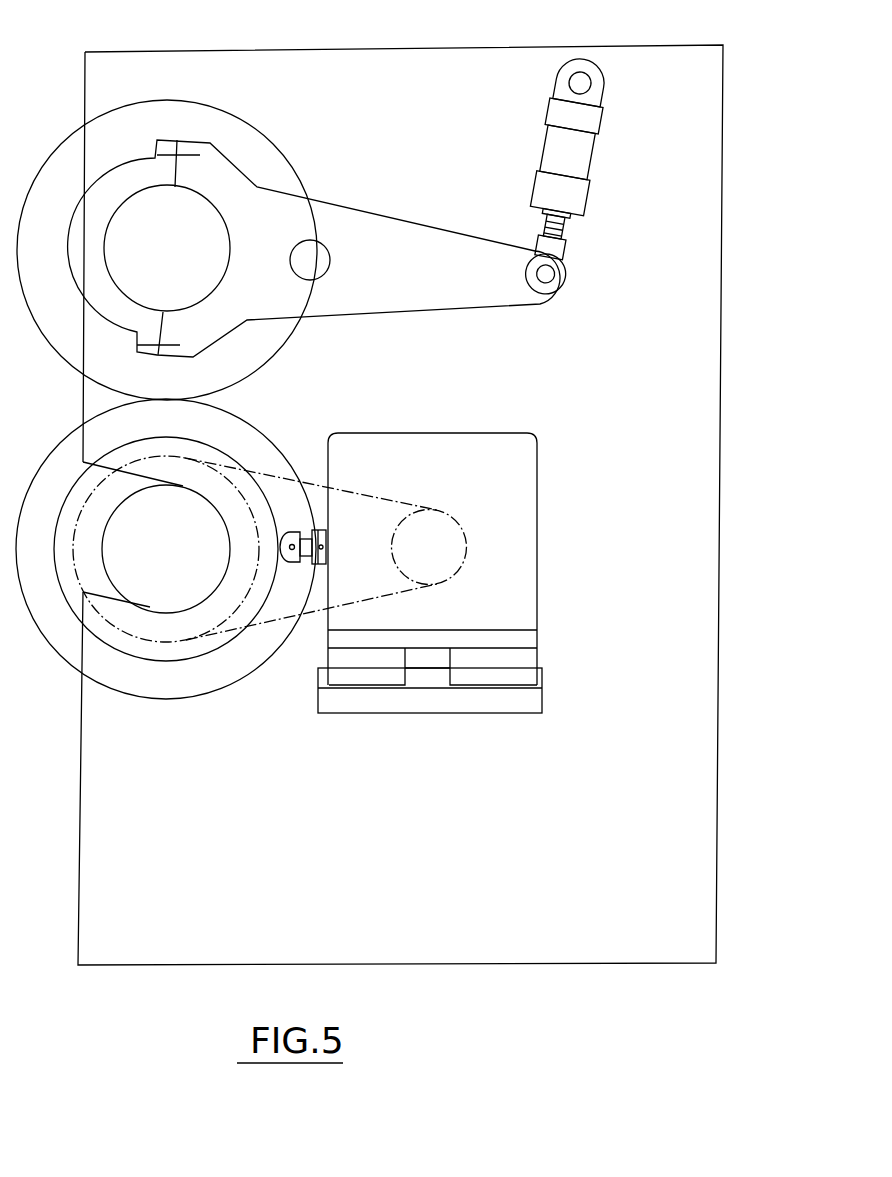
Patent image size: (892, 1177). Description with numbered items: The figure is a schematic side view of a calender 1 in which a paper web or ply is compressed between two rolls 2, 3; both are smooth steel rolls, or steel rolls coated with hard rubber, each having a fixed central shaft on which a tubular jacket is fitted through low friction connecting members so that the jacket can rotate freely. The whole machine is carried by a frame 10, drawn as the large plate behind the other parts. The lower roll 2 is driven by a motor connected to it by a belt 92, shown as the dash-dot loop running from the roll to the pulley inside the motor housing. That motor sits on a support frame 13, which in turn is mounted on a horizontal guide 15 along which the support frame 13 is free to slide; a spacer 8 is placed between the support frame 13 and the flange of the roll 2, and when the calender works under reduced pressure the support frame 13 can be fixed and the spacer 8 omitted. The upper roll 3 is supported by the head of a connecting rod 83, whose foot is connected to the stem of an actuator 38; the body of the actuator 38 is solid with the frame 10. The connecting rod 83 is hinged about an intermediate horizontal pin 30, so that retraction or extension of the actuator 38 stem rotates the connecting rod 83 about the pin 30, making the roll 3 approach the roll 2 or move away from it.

The calender 1 is at (77, 1060).
The roll 2 is at (45, 685).
The roll 3 is at (52, 108).
The spacer 8 is at (303, 563).
The frame 10 is at (702, 848).
The support frame 13 is at (527, 465).
The horizontal guide 15 is at (540, 678).
The horizontal pin 30 is at (330, 263).
The actuator 38 is at (580, 158).
The connecting rod 83 is at (423, 238).
The belt 92 is at (367, 492).